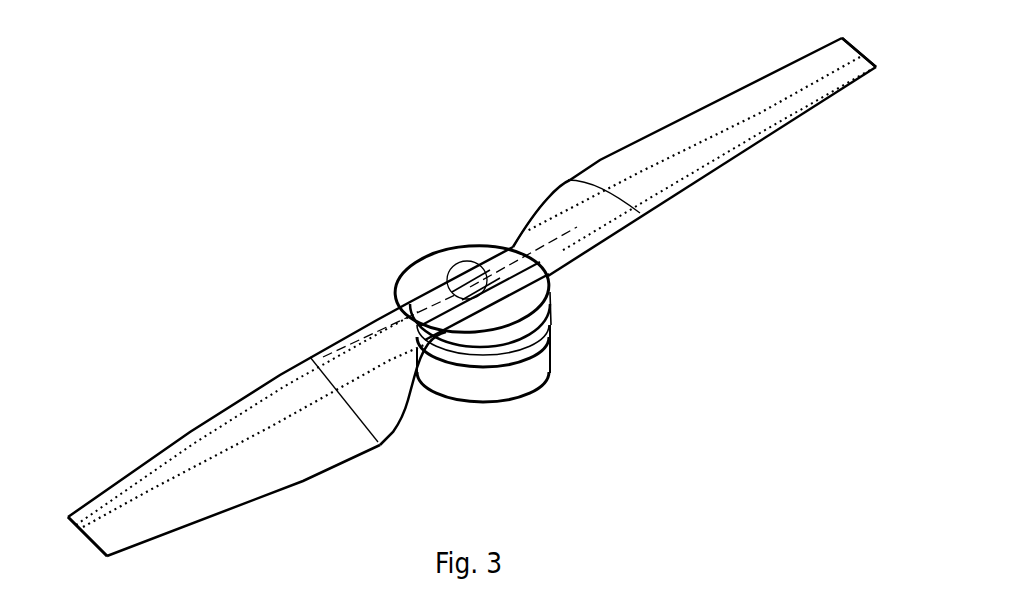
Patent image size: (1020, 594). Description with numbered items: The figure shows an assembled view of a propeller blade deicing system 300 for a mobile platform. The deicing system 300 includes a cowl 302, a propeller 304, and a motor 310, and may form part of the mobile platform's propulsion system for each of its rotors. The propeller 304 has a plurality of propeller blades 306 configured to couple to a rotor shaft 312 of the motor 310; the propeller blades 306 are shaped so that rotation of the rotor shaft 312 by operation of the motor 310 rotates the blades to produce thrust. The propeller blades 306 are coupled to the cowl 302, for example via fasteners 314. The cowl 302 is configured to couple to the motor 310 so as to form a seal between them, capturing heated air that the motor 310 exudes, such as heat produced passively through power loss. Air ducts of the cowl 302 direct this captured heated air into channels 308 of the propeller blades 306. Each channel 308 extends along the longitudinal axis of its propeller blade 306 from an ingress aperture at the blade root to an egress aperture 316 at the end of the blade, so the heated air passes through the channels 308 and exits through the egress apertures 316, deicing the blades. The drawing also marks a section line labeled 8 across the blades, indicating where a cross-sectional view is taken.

The propeller blade deicing system 300 is at (240, 186).
The cowl 302 is at (528, 302).
The propeller 304 is at (523, 237).
The propeller blades 306 is at (280, 472).
The channels 308 is at (140, 494).
The motor 310 is at (533, 367).
The rotor shaft 312 is at (452, 280).
The fasteners 314 is at (470, 270).
The egress aperture 316 is at (79, 525).
The section line 8- 8 is at (340, 362).